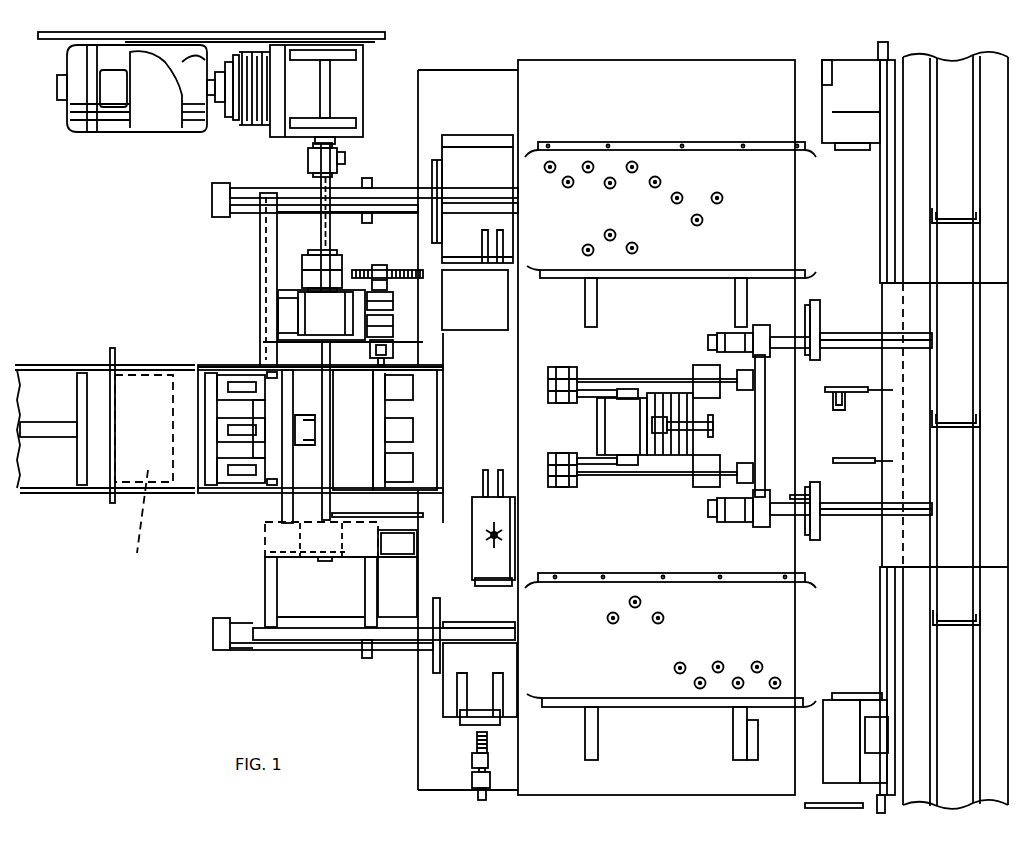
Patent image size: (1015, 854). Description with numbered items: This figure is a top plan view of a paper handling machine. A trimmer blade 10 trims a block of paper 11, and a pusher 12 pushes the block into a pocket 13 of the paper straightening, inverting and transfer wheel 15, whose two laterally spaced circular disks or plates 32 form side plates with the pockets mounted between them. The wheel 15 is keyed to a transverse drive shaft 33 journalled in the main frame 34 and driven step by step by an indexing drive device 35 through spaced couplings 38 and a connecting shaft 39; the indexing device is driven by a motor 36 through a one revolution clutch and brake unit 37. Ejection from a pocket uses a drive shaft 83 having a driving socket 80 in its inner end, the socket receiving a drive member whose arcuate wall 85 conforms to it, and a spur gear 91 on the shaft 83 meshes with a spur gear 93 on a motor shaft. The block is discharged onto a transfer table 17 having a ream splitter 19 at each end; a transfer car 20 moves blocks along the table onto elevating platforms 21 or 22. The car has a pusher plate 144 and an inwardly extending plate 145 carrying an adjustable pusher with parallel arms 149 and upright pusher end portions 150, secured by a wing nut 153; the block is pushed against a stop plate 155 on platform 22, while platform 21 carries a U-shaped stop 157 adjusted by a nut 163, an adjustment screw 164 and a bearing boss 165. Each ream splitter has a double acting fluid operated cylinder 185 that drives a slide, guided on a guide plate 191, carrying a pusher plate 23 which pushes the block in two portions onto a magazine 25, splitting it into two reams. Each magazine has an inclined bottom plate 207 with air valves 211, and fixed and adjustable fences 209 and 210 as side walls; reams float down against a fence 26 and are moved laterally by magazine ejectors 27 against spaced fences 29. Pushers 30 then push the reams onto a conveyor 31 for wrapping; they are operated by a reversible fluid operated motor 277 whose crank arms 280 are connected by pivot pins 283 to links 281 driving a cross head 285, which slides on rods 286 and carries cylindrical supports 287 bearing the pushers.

The trimmer blade 10 is at (115, 418).
The block of paper 11 is at (140, 516).
The pusher 12 is at (83, 375).
The pocket 13 is at (205, 470).
The paper straightening, inverting and transfer wheel 15 is at (220, 366).
The transfer table 17 is at (520, 342).
The ream splitter 19 is at (405, 188).
The transfer car 20 is at (497, 510).
The elevating platform 21 is at (510, 652).
The elevating platform 22 is at (518, 183).
The pusher plate 23 is at (442, 172).
The magazine 25 is at (733, 135).
The fence 26 is at (880, 205).
The magazine ejector 27 is at (870, 150).
The fence 29 is at (853, 388).
The pusher 30 is at (820, 315).
The conveyor 31 is at (950, 382).
The circular disk or plate 32 is at (267, 370).
The drive shaft 33 is at (330, 365).
The main frame 34 is at (258, 232).
The indexing drive device 35 is at (363, 92).
The motor 36 is at (80, 132).
The one revolution clutch and brake unit 37 is at (248, 118).
The coupling 38 is at (308, 155).
The connecting shaft 39 is at (321, 230).
The driving socket 80 is at (393, 327).
The drive shaft 83 is at (395, 305).
The wall 85 is at (395, 354).
The spur gear 91 is at (366, 268).
The spur gear 93 is at (410, 268).
The pusher plate 144 is at (497, 586).
The plate 145 is at (417, 568).
The pusher arm 149 is at (483, 492).
The upright pusher end portion 150 is at (485, 470).
The wing nut 153 is at (497, 540).
The stop plate 155 is at (475, 140).
The U-shaped stop 157 is at (478, 712).
The nut 163 is at (472, 760).
The adjustment screw 164 is at (488, 740).
The bearing boss 165 is at (490, 782).
The double acting fluid operated cylinder 185 is at (247, 185).
The guide plate 191 is at (482, 212).
The inclined bottom plate 207 is at (600, 165).
The fixed fence 209 is at (642, 142).
The adjustable fence 210 is at (700, 278).
The air valve 211 is at (616, 235).
The reversible fluid operated motor 277 is at (620, 430).
The crank arm 280 is at (605, 390).
The link 281 is at (660, 378).
The pivot pin 283 is at (555, 372).
The cross head 285 is at (713, 424).
The rod 286 is at (860, 333).
The cylindrical support 287 is at (800, 500).